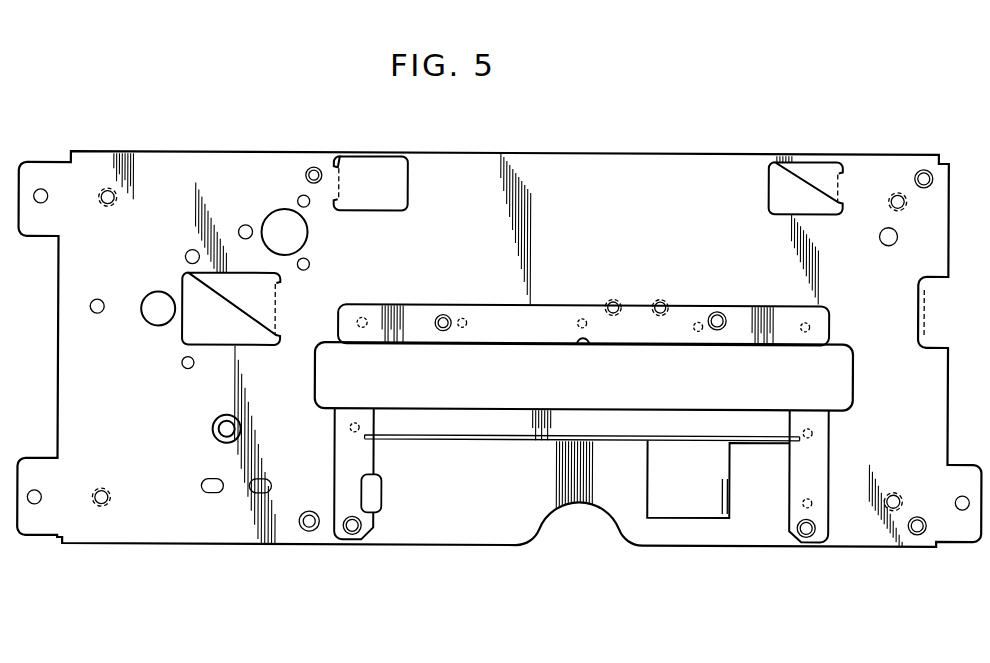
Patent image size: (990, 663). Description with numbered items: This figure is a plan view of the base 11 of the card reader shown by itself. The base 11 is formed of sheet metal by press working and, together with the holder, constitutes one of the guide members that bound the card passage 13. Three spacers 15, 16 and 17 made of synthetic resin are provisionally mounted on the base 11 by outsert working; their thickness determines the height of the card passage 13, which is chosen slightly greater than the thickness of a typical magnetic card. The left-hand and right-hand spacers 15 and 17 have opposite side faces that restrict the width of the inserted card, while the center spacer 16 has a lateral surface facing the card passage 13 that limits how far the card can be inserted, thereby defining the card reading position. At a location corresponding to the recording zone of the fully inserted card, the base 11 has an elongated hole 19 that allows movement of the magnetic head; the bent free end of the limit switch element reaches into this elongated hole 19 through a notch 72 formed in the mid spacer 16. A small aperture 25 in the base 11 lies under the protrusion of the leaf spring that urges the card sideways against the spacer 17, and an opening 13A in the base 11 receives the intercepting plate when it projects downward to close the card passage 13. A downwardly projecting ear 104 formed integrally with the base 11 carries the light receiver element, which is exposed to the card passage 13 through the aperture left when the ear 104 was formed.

The base 11 is at (698, 153).
The card passage 13 is at (596, 497).
The opening 13A is at (487, 441).
The spacer 15 is at (335, 545).
The spacer 16 is at (497, 304).
The spacer 17 is at (830, 490).
The elongated hole 19 is at (852, 366).
The small aperture 25 is at (378, 493).
The notch 72 is at (579, 340).
The downwardly projecting ear 104 is at (729, 488).